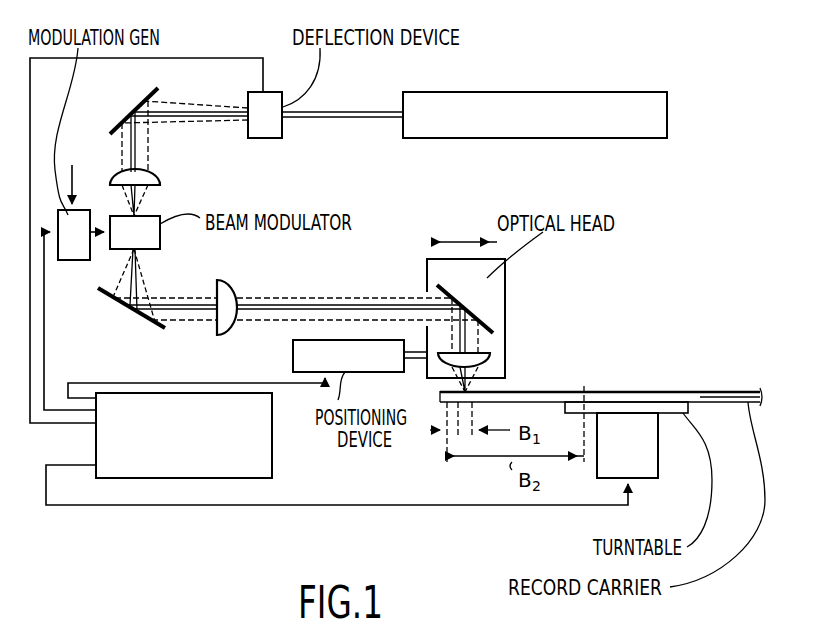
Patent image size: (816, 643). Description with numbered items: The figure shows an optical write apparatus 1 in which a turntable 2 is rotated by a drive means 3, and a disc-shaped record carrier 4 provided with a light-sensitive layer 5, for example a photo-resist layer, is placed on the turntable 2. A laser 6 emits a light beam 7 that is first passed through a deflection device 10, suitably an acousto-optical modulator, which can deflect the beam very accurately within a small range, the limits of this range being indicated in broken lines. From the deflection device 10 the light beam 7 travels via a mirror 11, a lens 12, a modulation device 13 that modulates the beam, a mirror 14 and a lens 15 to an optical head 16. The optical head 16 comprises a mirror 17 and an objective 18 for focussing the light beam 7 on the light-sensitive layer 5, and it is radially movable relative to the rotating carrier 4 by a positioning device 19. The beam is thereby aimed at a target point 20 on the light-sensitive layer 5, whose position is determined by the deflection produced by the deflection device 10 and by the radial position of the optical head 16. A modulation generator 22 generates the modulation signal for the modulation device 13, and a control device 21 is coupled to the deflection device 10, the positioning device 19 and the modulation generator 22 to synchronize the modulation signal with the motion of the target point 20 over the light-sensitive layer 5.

The optical write apparatus 1 is at (690, 282).
The turntable 2 is at (675, 413).
The drive means 3 is at (650, 455).
The record carrier 4 is at (727, 402).
The light-sensitive layer 5 is at (708, 392).
The laser 6 is at (642, 139).
The light beam 7 is at (344, 112).
The deflection device 10 is at (283, 104).
The mirror 11 is at (128, 114).
The lens 12 is at (160, 181).
The modulation device 13 is at (162, 234).
The mirror 14 is at (136, 325).
The lens 15 is at (232, 322).
The optical head 16 is at (493, 281).
The mirror 17 is at (490, 323).
The objective 18 is at (478, 364).
The positioning device 19 is at (377, 362).
The target point 20 is at (470, 392).
The control device 21 is at (258, 446).
The modulation generator 22 is at (76, 258).